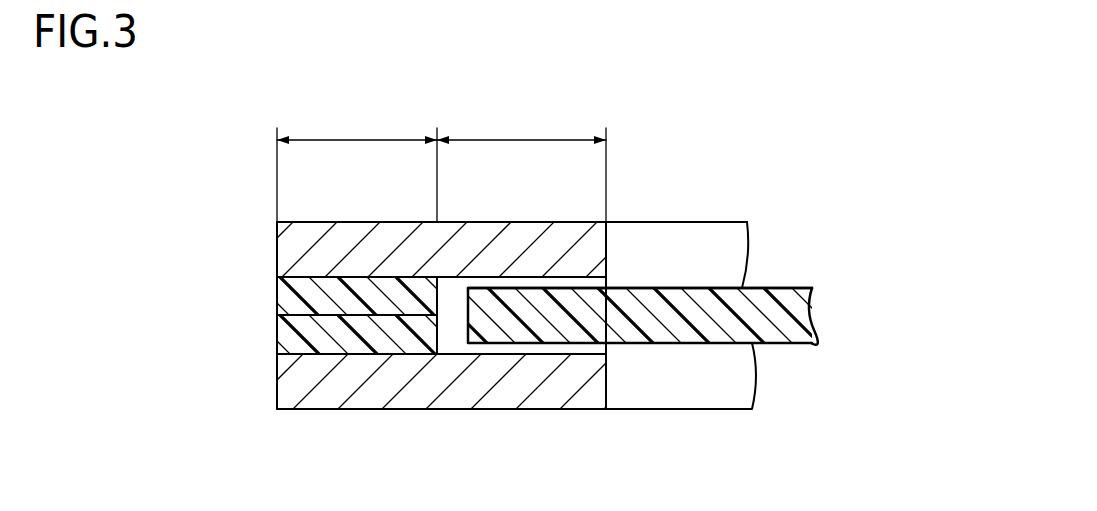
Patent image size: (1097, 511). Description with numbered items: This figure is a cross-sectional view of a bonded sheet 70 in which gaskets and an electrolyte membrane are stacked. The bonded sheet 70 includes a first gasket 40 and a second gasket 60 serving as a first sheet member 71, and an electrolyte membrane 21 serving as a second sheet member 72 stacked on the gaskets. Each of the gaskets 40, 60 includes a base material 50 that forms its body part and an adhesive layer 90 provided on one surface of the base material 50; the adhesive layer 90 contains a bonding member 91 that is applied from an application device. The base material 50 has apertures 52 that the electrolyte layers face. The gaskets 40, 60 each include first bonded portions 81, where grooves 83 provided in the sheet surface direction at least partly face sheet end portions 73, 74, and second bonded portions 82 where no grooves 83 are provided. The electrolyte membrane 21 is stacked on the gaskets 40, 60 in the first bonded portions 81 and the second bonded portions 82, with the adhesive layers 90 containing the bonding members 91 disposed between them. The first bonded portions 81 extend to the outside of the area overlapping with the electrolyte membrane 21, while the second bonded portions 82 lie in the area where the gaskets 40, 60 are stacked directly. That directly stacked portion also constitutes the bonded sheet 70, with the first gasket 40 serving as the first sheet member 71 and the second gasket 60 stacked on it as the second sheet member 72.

The electrolyte membrane 21 is at (785, 288).
The first gasket 40 is at (195, 317).
The base material 50 is at (276, 244).
The aperture 52 is at (697, 232).
The second gasket 60 is at (195, 230).
The bonded sheet 70 is at (750, 216).
The first sheet member 71 is at (146, 279).
The second sheet member 72 is at (805, 242).
The sheet end portion 73 is at (277, 222).
The sheet end portion 74 is at (609, 246).
The first bonded portion 81 is at (526, 140).
The second bonded portion 82 is at (357, 140).
The groove 83 is at (455, 280).
The adhesive layer 90 is at (272, 285).
The bonding member 91 is at (326, 280).